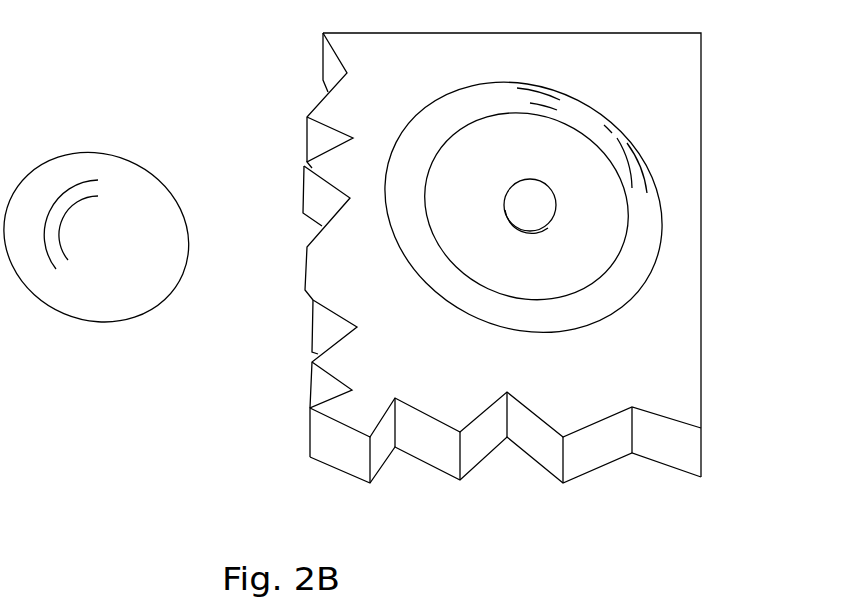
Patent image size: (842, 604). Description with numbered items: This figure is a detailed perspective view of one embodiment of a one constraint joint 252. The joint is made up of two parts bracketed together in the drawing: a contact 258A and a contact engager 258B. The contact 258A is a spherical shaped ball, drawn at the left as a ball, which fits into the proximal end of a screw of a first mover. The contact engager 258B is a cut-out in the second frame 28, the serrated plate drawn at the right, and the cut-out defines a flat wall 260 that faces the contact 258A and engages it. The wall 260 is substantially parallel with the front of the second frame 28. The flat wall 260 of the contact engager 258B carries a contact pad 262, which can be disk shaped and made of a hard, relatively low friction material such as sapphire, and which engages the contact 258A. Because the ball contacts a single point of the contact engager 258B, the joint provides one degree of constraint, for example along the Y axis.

The second frame 28 is at (683, 100).
The one constraint joint 252 is at (278, 181).
The contact 258A is at (104, 160).
The contact engager 258B is at (495, 200).
The flat wall 260 is at (473, 221).
The contact pad 262 is at (520, 207).